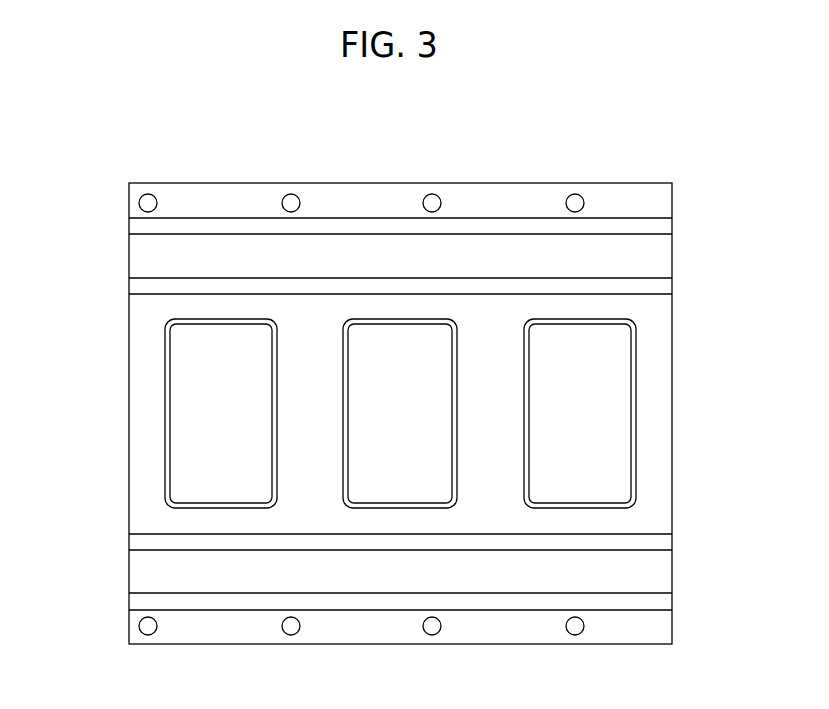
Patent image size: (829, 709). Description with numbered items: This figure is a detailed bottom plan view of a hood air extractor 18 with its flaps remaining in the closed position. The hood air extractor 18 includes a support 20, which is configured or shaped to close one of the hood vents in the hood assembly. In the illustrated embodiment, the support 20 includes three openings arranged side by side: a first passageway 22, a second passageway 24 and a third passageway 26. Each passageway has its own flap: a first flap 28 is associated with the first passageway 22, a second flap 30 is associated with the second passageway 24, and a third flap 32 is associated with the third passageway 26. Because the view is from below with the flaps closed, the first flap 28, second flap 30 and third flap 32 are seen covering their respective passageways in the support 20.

The hood air extractor 18 is at (608, 153).
The support 20 is at (146, 323).
The first passageway 22 is at (197, 408).
The second passageway 24 is at (395, 357).
The third passageway 26 is at (598, 378).
The first flap 28 is at (219, 473).
The second flap 30 is at (398, 472).
The third flap 32 is at (602, 431).